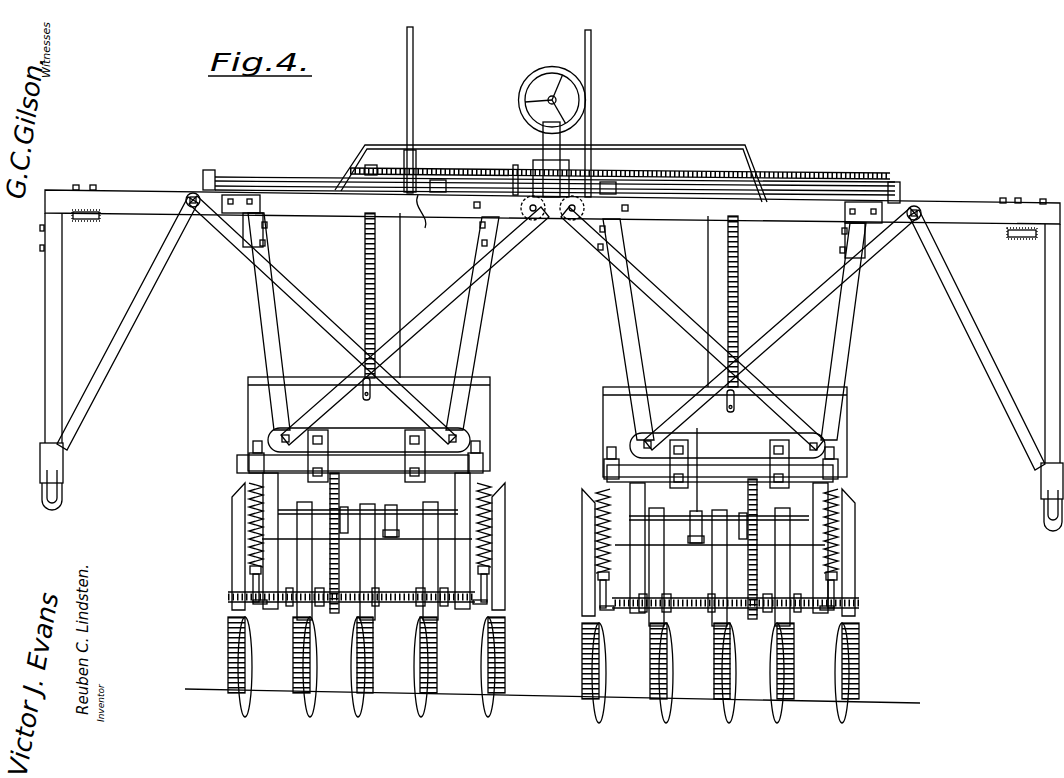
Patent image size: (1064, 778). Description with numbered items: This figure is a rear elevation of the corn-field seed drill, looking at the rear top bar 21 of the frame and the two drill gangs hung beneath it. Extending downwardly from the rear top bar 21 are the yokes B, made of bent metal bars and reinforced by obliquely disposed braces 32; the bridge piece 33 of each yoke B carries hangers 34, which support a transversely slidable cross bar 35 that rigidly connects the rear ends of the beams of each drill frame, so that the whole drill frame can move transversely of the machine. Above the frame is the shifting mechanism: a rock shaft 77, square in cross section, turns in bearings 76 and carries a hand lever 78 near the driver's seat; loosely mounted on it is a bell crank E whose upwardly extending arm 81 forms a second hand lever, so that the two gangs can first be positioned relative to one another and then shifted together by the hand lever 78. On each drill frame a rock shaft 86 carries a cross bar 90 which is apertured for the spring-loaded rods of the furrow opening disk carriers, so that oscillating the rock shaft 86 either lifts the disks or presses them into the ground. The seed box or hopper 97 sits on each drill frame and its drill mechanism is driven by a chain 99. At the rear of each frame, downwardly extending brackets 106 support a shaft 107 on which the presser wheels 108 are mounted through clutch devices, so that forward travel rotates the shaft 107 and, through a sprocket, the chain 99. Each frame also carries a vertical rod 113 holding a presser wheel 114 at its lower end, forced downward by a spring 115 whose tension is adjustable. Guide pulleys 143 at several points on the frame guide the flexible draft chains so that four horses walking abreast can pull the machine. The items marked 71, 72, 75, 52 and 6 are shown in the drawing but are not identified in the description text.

The rear top bar 21 is at (950, 210).
The upwardly extending arm 81 is at (413, 57).
The hand lever 78 is at (592, 60).
The hand wheel 71 is at (540, 72).
The wheel stem 72 is at (533, 112).
The rail frame 75 is at (670, 148).
The rock shaft 77 is at (283, 185).
The bearings 76 is at (210, 170).
The bell crank E is at (425, 218).
The pulleys 143 is at (90, 219).
The braces 32 is at (498, 257).
The hatched post 52 is at (365, 248).
The yokes B is at (478, 327).
The seed box or hopper 97 is at (491, 412).
The bridge piece 33 is at (352, 440).
The hangers 34 is at (409, 448).
The cross bar 35 is at (455, 462).
The spring 115 is at (242, 488).
The vertical rod 113 is at (253, 575).
The arms or brackets 106 is at (470, 562).
The cross bar 90 is at (420, 540).
The rock shaft 86 is at (405, 500).
The chain 99 is at (339, 562).
The shaft 107 is at (400, 606).
The presser wheel 114 is at (232, 662).
The presser wheels 108 is at (420, 689).
The rod 6 is at (695, 465).